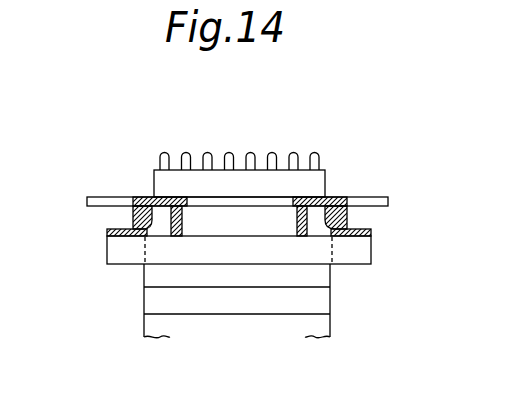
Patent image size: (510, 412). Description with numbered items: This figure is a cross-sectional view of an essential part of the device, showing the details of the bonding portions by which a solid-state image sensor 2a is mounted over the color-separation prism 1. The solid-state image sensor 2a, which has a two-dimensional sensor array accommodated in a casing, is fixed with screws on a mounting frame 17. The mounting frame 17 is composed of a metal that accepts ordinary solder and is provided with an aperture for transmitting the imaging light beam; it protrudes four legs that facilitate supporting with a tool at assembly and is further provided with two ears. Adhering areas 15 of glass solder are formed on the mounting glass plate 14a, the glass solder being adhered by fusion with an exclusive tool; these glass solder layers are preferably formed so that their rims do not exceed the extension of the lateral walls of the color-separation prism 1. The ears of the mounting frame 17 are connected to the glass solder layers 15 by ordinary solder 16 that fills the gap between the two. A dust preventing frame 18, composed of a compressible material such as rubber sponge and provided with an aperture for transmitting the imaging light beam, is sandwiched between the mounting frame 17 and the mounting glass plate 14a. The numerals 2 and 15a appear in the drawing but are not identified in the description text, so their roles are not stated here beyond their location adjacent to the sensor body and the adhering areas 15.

The color-separation prism 1 is at (144, 303).
The base 2 is at (158, 300).
The solid-state image sensor 2a is at (167, 183).
The mounting glass plate 14a is at (207, 252).
The adhering area of glass solder 15 is at (107, 243).
The engaging portion 15a is at (140, 242).
The ordinary solder 16 is at (133, 216).
The mounting frame 17 is at (88, 200).
The dust preventing frame 18 is at (305, 236).